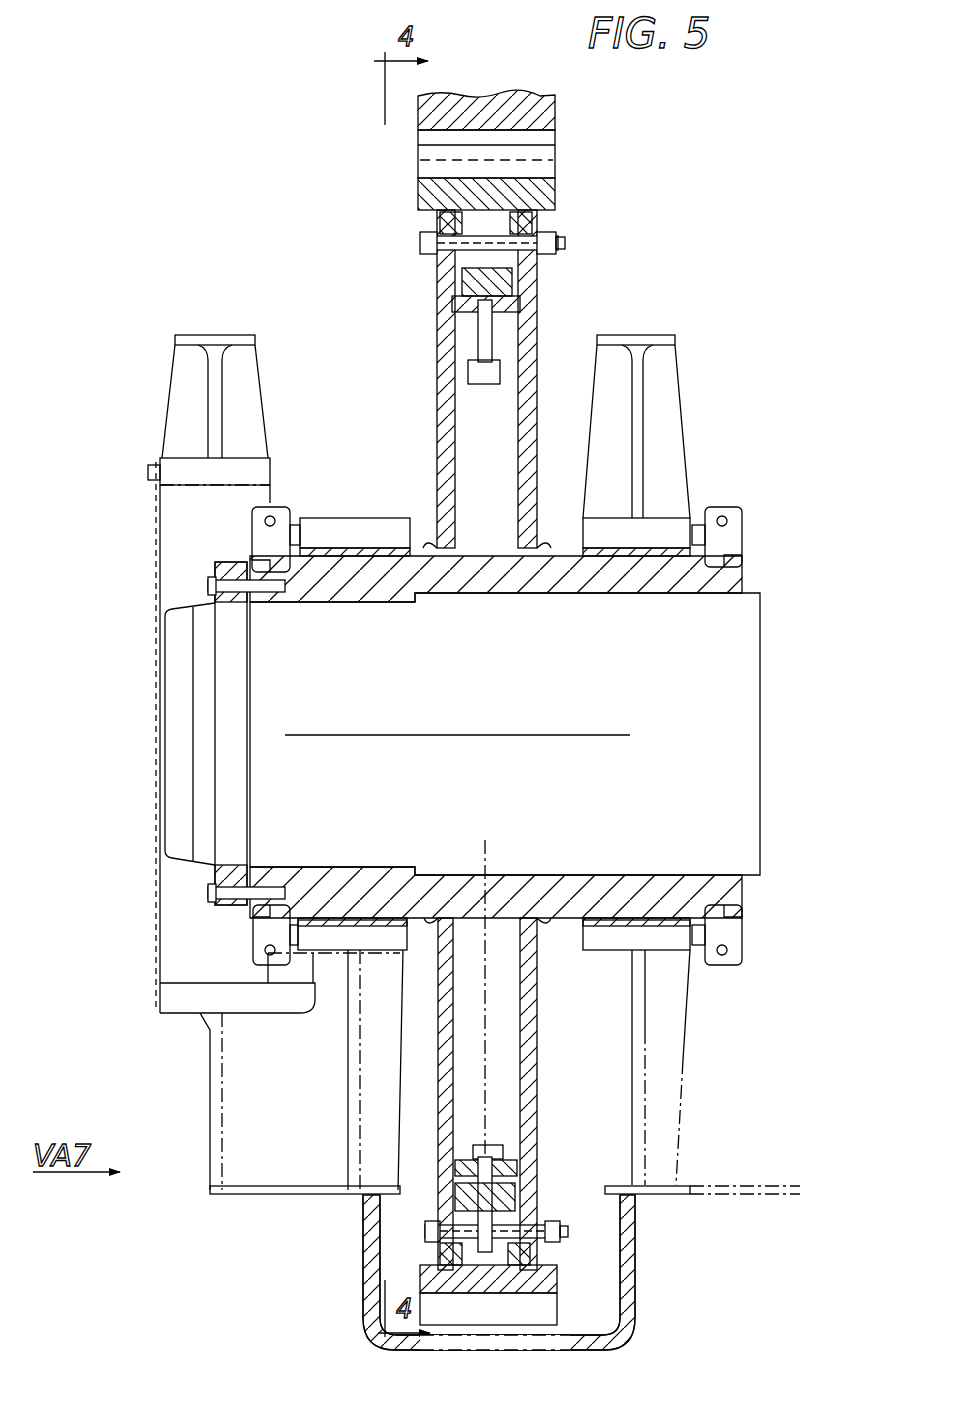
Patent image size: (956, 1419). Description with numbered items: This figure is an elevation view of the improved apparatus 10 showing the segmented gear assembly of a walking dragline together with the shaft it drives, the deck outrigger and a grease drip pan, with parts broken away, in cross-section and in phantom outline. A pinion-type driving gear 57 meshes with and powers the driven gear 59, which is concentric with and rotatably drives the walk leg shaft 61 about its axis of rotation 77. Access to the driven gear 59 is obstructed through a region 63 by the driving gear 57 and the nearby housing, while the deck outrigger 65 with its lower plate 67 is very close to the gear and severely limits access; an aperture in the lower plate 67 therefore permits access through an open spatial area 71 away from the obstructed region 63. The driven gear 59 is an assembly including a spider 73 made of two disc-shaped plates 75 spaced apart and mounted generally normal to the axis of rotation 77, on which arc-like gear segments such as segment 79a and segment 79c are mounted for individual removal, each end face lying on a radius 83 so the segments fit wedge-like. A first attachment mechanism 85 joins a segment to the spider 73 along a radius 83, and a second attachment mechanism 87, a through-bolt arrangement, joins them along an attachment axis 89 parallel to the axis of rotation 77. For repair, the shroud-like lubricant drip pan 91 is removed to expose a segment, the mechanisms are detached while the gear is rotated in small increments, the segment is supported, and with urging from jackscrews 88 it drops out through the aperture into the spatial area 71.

The apparatus 10 is at (722, 1006).
The driving gear 57 is at (553, 110).
The driven gear 59 is at (598, 318).
The walk leg shaft 61 is at (748, 614).
The region 63 is at (138, 396).
The deck outrigger 65 is at (210, 1138).
The lower plate 67 is at (282, 1196).
The spatial area 71 is at (750, 1232).
The spider 73 is at (440, 400).
The disc-shaped plates 75 is at (532, 1010).
The axis of rotation 77 is at (540, 730).
The gear segment 79a is at (418, 202).
The gear segment 79c is at (556, 1282).
The radius 83 is at (488, 1058).
The first attachment mechanism 85 is at (560, 1147).
The second attachment mechanism 87 is at (414, 262).
The jackscrews 88 is at (480, 364).
The attachment axis 89 is at (570, 250).
The lubricant drip pan 91 is at (636, 1322).